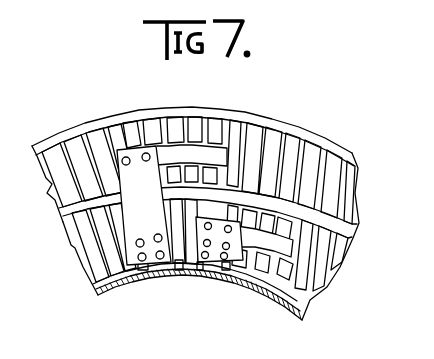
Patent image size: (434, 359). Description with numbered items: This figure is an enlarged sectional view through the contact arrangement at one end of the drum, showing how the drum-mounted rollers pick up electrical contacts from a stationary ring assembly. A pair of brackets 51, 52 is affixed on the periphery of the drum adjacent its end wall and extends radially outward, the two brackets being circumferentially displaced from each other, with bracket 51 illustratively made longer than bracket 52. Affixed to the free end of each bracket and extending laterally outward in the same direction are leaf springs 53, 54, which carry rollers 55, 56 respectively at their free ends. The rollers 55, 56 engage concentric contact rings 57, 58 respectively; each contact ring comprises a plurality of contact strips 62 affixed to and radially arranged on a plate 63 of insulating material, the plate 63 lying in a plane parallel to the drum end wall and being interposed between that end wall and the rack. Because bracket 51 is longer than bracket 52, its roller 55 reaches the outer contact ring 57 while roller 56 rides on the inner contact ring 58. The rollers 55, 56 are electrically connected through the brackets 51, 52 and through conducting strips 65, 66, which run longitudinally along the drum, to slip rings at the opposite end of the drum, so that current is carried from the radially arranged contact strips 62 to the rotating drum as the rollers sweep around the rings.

The bracket 51 is at (140, 223).
The bracket 52 is at (180, 265).
The leaf spring 53 is at (191, 150).
The leaf spring 54 is at (254, 268).
The roller 55 is at (236, 135).
The roller 56 is at (264, 242).
The contact ring 57 is at (44, 176).
The contact ring 58 is at (74, 250).
The contact strips 62 is at (113, 135).
The plate of insulating material 63 is at (271, 122).
The conducting strip 65 is at (143, 272).
The conducting strip 66 is at (205, 270).